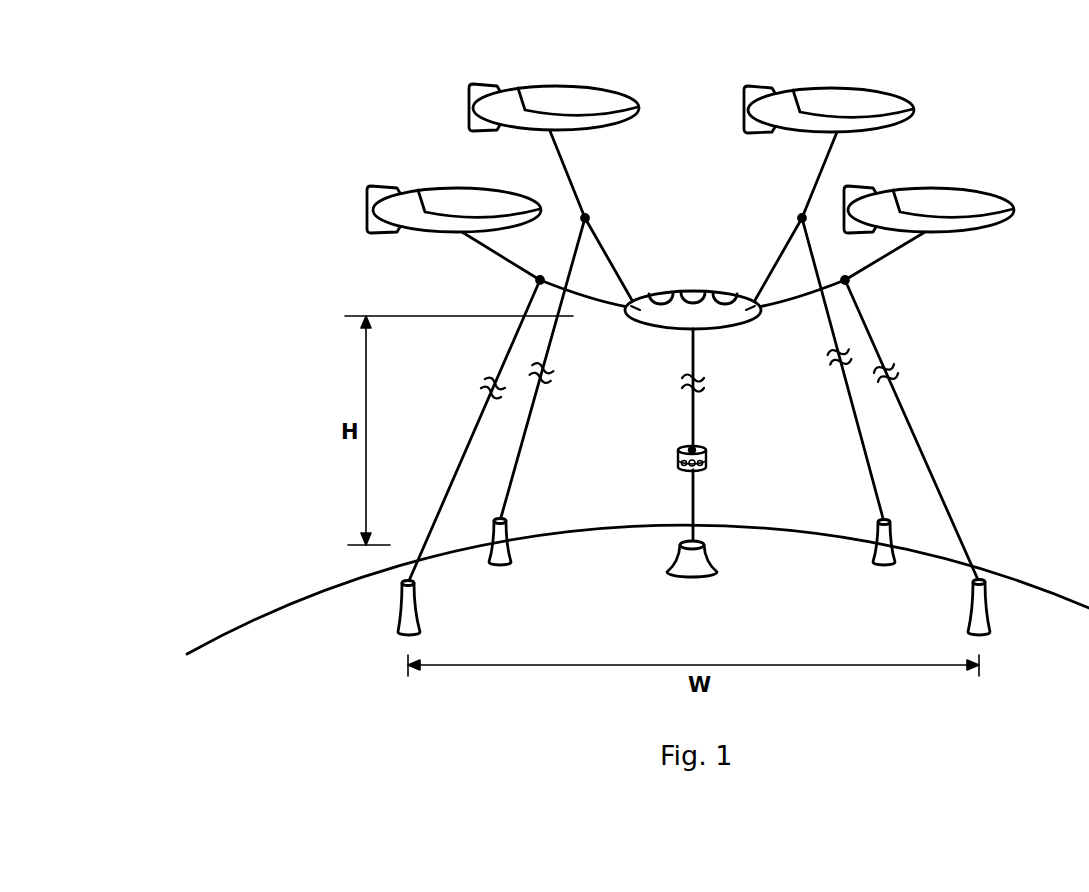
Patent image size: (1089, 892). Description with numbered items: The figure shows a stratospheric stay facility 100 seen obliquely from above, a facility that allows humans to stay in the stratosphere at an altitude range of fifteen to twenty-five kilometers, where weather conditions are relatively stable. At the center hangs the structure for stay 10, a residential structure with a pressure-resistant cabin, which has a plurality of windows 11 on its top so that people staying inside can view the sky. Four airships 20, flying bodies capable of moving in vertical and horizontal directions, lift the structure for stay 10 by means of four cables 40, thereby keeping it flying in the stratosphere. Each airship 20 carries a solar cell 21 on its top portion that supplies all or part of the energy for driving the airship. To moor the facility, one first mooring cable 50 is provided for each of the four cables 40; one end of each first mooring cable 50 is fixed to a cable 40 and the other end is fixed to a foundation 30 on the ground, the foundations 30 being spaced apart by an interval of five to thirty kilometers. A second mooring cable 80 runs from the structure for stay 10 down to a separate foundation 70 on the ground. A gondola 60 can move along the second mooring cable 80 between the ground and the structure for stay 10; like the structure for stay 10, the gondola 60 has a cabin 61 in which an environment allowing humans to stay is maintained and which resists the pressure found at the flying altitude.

The stratospheric stay facility 100 is at (232, 112).
The structure for stay 10 is at (638, 323).
The windows 11 is at (695, 292).
The airship 20 is at (622, 90).
The solar cell 21 is at (553, 94).
The foundation 30 is at (510, 556).
The cable 40 is at (570, 174).
The first mooring cable 50 is at (463, 455).
The gondola 60 is at (705, 449).
The cabin 61 is at (681, 447).
The foundation 70 is at (683, 570).
The second mooring cable 80 is at (691, 500).